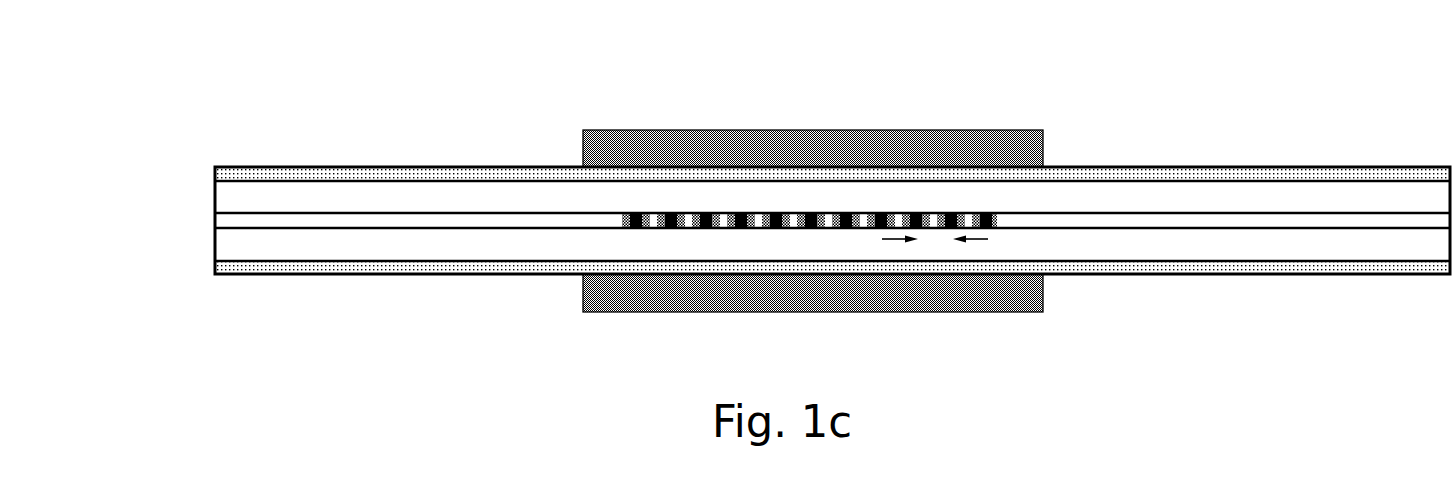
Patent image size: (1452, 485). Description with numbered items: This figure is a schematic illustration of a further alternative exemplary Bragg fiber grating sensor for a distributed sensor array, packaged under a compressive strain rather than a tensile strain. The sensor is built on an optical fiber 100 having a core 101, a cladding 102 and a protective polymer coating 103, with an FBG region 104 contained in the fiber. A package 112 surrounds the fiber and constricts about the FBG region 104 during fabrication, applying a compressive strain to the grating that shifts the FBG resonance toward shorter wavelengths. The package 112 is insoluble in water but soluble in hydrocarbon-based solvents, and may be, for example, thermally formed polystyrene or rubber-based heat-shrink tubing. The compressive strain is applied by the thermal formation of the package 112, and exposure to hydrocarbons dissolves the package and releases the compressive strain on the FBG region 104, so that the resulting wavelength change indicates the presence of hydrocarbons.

The fiber 100 is at (766, 189).
The core 101 is at (233, 226).
The cladding 102 is at (286, 200).
The protective polymer coating 103 is at (428, 166).
The FBG region 104 is at (992, 212).
The package 112 is at (645, 302).